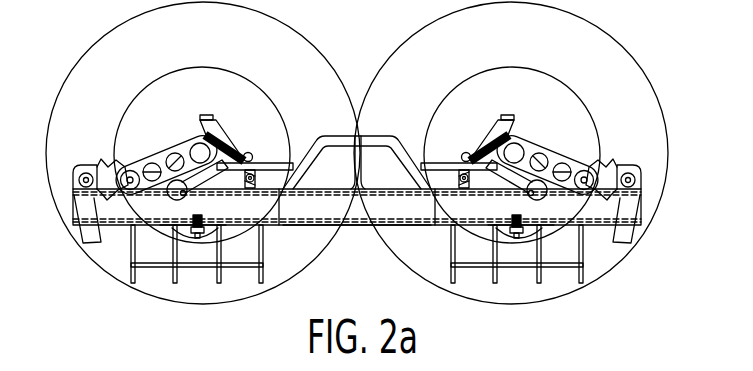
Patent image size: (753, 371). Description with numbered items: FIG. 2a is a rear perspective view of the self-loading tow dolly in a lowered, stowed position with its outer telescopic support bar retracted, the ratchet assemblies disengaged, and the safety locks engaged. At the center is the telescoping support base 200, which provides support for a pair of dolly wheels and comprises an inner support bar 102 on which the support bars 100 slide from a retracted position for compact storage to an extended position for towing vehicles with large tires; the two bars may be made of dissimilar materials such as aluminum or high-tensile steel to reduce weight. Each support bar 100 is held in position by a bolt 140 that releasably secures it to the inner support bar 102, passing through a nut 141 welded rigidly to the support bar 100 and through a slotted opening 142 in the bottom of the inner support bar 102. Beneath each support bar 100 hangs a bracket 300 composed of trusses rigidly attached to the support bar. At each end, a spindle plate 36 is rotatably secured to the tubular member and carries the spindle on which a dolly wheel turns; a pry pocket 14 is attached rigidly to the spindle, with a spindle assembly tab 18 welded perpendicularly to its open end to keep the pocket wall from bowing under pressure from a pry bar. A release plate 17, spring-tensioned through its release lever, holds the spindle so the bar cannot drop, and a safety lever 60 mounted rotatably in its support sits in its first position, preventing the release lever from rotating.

The pry pocket 14 is at (493, 123).
The release plate 17 is at (620, 242).
The spindle assembly tab 18 is at (461, 165).
The spindle plate 36 is at (552, 153).
The safety lever 60 is at (464, 153).
The support bar 100 is at (484, 217).
The inner support bar 102 is at (346, 226).
The bolt 140 is at (533, 236).
The nut 141 is at (503, 236).
The slotted opening 142 is at (547, 222).
The telescoping support base 200 is at (356, 108).
The bracket 300 is at (450, 257).